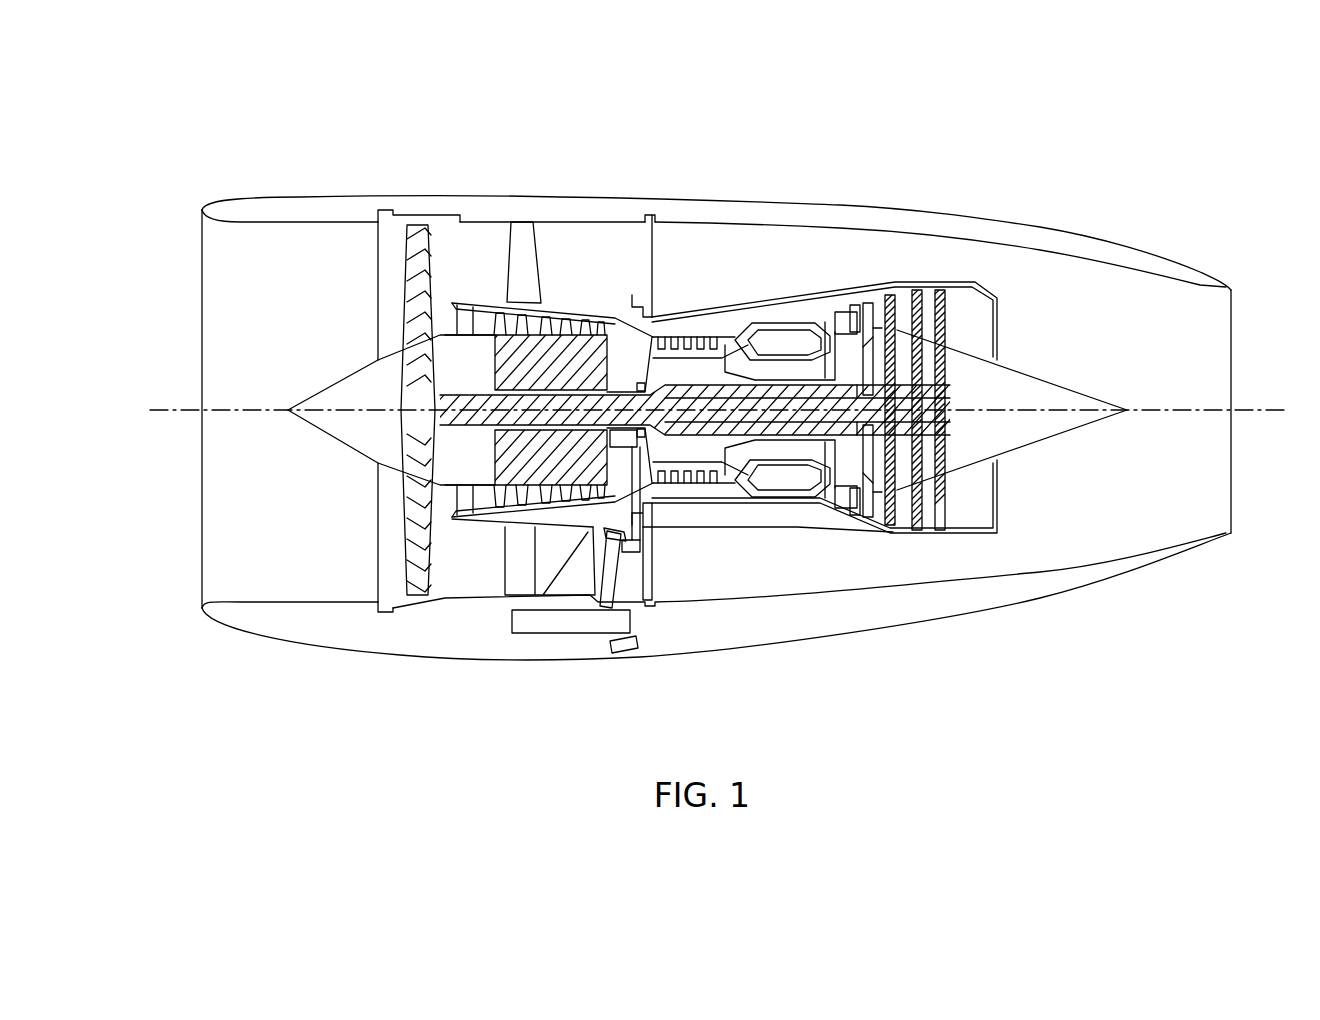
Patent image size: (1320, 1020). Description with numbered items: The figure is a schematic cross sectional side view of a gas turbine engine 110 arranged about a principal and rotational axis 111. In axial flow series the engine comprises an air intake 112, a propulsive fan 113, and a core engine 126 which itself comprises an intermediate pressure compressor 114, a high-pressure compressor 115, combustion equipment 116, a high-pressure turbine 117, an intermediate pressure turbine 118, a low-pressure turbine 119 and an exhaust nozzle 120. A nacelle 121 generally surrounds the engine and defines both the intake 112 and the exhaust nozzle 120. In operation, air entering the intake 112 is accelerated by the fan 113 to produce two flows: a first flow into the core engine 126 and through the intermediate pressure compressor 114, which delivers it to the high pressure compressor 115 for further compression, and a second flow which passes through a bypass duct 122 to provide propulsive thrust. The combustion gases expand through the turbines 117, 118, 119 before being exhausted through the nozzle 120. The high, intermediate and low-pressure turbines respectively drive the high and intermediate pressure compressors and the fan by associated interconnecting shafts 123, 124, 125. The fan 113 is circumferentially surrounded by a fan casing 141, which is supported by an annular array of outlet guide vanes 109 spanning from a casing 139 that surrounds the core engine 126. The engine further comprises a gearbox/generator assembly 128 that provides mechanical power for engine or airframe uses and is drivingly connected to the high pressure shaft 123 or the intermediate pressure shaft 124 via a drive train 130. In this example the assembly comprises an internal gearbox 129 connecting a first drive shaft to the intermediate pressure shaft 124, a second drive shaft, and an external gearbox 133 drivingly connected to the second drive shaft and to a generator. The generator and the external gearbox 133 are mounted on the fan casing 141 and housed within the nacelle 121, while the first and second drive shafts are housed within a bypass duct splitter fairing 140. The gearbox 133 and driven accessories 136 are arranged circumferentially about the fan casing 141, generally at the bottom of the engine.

The outlet guide vanes 109 is at (518, 248).
The gas turbine engine 110 is at (785, 193).
The principal and rotational axis 111 is at (1190, 412).
The air intake 112 is at (258, 640).
The propulsive fan 113 is at (402, 530).
The intermediate pressure compressor 114 is at (558, 296).
The high-pressure compressor 115 is at (695, 335).
The combustion equipment 116 is at (765, 314).
The high-pressure turbine 117 is at (823, 317).
The intermediate pressure turbine 118 is at (868, 292).
The low-pressure turbine 119 is at (916, 278).
The exhaust nozzle 120 is at (1140, 247).
The nacelle 121 is at (272, 198).
The bypass duct 122 is at (625, 407).
The high pressure shaft 123 is at (787, 446).
The intermediate pressure shaft 124 is at (710, 436).
The interconnecting shaft 125 is at (862, 420).
The core engine 126 is at (667, 305).
The gearbox/generator assembly 128 is at (523, 650).
The internal gearbox 129 is at (610, 432).
The drive train 130 is at (648, 508).
The external gearbox 133 is at (512, 620).
The driven accessories 136 is at (625, 652).
The casing 139 is at (815, 522).
The bypass duct splitter fairing 140 is at (560, 575).
The fan casing 141 is at (423, 222).